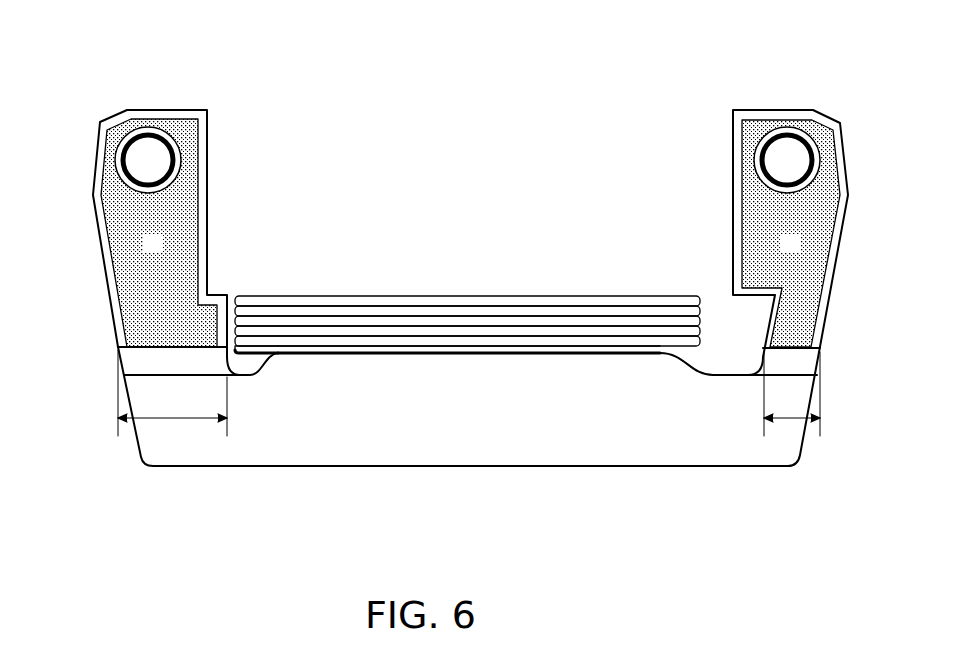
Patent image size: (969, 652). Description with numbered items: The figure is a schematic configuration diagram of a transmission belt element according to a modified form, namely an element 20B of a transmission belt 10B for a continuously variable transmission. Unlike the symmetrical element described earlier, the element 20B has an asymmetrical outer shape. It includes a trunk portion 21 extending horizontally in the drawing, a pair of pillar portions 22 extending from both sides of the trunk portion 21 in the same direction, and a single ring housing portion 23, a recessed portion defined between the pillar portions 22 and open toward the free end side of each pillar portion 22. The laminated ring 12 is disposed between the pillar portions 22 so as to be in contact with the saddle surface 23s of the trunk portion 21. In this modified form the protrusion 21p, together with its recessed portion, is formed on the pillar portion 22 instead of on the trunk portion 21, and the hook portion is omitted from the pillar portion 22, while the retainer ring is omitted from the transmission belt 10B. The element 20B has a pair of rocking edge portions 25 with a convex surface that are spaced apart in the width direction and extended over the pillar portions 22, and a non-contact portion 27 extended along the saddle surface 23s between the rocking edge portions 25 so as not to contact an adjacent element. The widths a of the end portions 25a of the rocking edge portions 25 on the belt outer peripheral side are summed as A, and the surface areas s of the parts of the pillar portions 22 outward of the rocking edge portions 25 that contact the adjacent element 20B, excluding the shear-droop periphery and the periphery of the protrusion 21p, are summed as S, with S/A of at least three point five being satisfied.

The transmission belt 10B is at (523, 133).
The laminated ring 12 is at (629, 294).
The element 20B is at (681, 474).
The trunk portion 21 is at (360, 432).
The protrusion 21p is at (148, 160).
The pillar portion 22 is at (93, 200).
The ring housing portion 23 is at (748, 341).
The saddle surface 23s is at (343, 352).
The rocking edge portion 25 is at (182, 362).
The end portion of rocking edge portion 25a is at (187, 347).
The non-contact portion 27 is at (513, 363).